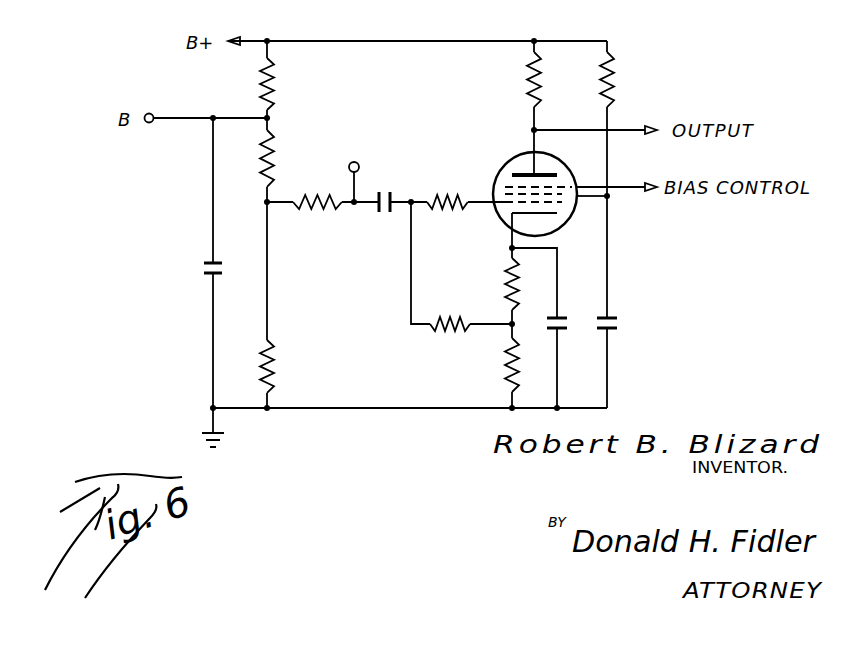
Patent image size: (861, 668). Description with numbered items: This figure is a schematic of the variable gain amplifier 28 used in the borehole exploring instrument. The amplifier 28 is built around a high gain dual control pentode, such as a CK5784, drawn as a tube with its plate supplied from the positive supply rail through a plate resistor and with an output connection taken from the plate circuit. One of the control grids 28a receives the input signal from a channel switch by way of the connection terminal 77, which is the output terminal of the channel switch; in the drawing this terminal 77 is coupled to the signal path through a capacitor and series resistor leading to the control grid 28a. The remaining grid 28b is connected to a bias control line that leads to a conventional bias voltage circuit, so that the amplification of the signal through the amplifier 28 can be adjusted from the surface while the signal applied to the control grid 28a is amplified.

The variable gain amplifier 28 is at (442, 300).
The control grid 28a is at (508, 203).
The grid 28b is at (494, 184).
The output terminal 77 is at (360, 170).